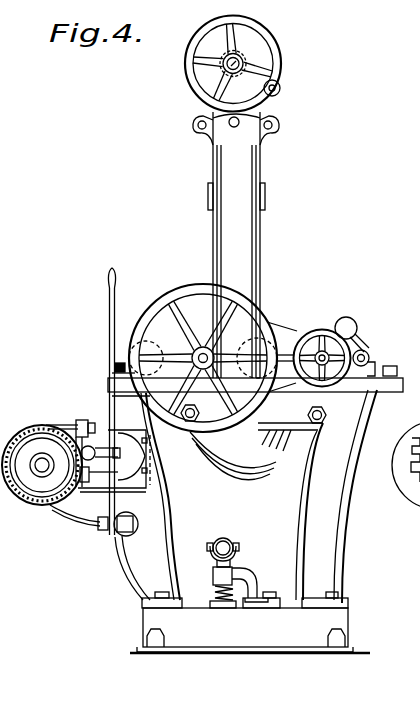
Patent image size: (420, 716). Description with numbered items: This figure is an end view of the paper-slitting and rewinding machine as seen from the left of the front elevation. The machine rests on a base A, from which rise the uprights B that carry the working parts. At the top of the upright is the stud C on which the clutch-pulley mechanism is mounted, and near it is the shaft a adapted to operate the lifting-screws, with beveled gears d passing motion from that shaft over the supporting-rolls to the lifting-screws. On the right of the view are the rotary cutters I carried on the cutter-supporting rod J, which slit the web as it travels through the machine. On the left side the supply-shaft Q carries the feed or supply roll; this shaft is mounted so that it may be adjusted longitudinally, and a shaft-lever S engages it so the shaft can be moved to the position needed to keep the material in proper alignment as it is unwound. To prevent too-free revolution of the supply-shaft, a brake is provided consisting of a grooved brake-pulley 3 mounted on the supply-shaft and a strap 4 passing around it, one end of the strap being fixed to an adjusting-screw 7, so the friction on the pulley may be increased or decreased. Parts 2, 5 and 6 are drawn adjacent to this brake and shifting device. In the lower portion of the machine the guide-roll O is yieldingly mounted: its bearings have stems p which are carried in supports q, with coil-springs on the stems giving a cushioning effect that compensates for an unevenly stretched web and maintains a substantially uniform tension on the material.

The base A is at (240, 508).
The uprights B is at (222, 217).
The stud C is at (257, 23).
The shaft a is at (243, 57).
The beveled gears d is at (266, 82).
The shaft-lever S is at (115, 290).
The rotary cutters I is at (353, 323).
The cutter-supporting rod J is at (368, 350).
The supply-shaft Q is at (41, 473).
The connecting rod 2 is at (120, 537).
The brake-pulley 3 is at (40, 427).
The strap 4 is at (66, 425).
The pin 5 is at (99, 441).
The block 6 is at (99, 474).
The adjusting-screw 7 is at (89, 423).
The lower guide-roll O is at (224, 539).
The supports q is at (213, 576).
The stems p is at (214, 586).